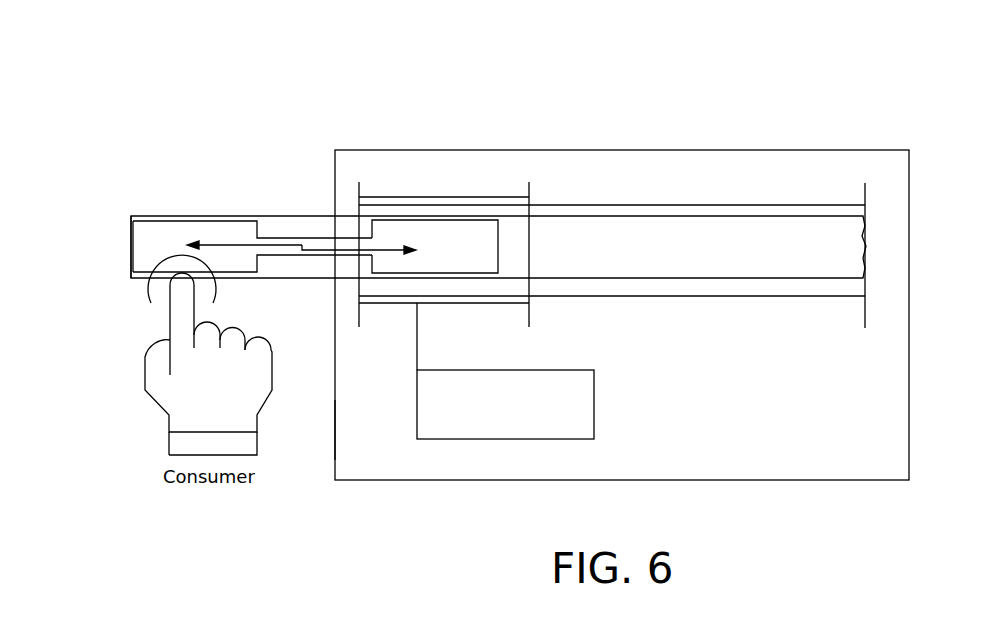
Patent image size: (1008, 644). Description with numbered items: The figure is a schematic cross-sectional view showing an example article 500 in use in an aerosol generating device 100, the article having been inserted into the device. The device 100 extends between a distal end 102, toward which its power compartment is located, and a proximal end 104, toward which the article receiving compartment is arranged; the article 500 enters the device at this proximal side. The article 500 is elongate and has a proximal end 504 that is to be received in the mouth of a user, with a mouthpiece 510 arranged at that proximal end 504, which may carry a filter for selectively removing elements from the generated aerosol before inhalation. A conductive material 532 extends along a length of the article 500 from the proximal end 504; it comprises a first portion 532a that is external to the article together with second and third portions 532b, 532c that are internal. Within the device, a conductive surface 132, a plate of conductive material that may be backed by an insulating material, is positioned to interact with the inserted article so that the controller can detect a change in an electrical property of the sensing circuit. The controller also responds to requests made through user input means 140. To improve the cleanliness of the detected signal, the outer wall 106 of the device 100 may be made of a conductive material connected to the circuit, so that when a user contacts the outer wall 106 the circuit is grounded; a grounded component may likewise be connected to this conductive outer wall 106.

The aerosol generating device 100 is at (866, 128).
The distal end 102 is at (910, 410).
The proximal end 104 is at (335, 430).
The outer wall 106 is at (655, 150).
The conductive surface 132 is at (487, 197).
The user input means 140 is at (596, 418).
The article 500 is at (460, 170).
The proximal end 504 is at (131, 238).
The mouthpiece 510 is at (131, 266).
The conductive material 532 is at (299, 156).
The first portion 532a is at (225, 233).
The second portion 532b is at (320, 240).
The third portion 532c is at (385, 227).